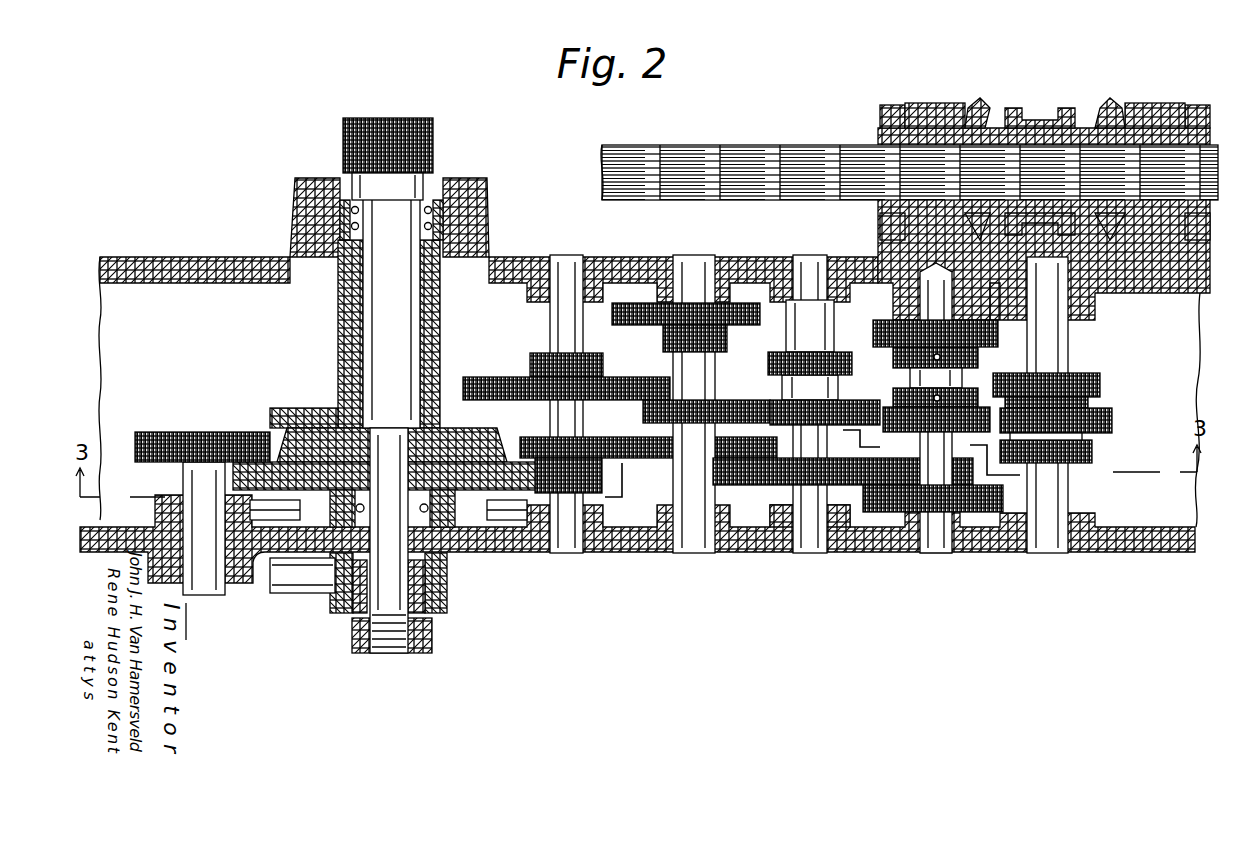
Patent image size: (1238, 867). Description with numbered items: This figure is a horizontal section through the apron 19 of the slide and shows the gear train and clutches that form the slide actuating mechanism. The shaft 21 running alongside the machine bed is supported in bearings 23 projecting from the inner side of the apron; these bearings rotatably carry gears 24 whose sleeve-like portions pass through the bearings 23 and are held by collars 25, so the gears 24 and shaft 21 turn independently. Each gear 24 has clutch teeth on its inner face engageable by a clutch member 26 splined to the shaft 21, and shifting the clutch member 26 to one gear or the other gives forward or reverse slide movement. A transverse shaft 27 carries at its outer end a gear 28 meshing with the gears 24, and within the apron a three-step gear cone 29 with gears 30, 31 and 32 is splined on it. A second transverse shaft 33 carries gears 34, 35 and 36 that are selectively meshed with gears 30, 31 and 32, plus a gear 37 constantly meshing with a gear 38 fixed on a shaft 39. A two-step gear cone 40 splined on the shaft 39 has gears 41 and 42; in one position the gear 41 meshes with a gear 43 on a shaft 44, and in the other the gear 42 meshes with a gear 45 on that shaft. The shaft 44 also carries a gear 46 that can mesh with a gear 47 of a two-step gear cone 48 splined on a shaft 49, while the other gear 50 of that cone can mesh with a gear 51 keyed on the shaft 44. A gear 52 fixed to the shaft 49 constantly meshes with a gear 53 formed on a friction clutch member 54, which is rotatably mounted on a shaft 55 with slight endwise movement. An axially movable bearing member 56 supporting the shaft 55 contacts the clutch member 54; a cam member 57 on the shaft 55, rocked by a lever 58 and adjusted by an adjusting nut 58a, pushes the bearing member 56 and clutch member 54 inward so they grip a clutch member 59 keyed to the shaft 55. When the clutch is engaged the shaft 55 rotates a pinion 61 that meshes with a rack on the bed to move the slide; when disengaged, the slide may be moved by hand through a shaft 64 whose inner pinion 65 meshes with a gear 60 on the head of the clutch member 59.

The apron 19 is at (662, 553).
The shaft 21 is at (750, 150).
The bearings 23 is at (933, 103).
The gears 24 is at (976, 99).
The collars 25 is at (890, 105).
The clutch member 26 is at (1030, 108).
The shaft 27 is at (1068, 345).
The gear 28 is at (1110, 268).
The three-step gear cone 29 is at (1090, 402).
The gear 30 is at (1090, 373).
The gear 31 is at (1112, 420).
The gear 32 is at (1092, 452).
The shaft 33 is at (905, 376).
The gear 34 is at (890, 322).
The gear 35 is at (868, 447).
The gear 36 is at (985, 515).
The gear 37 is at (925, 480).
The gear 38 is at (838, 553).
The shaft 39 is at (793, 335).
The two-step gear cone 40 is at (776, 393).
The gear 41 is at (853, 403).
The gear 42 is at (838, 347).
The gear 43 is at (652, 413).
The shaft 44 is at (673, 368).
The gear 45 is at (637, 320).
The gear 46 is at (656, 462).
The gear 47 is at (527, 436).
The two-step gear cone 48 is at (540, 365).
The shaft 49 is at (550, 322).
The gear 50 is at (490, 378).
The gear 51 is at (672, 340).
The gear 52 is at (548, 492).
The gear 53 is at (263, 492).
The friction clutch member 54 is at (323, 445).
The shaft 55 is at (375, 315).
The bearing member 56 is at (460, 552).
The cam member 57 is at (447, 597).
The lever 58 is at (342, 585).
The adjusting nut 58a is at (428, 650).
The clutch member 59 is at (338, 343).
The gear 60 is at (268, 420).
The pinion 61 is at (420, 120).
The shaft 64 is at (200, 595).
The pinion 65 is at (160, 432).